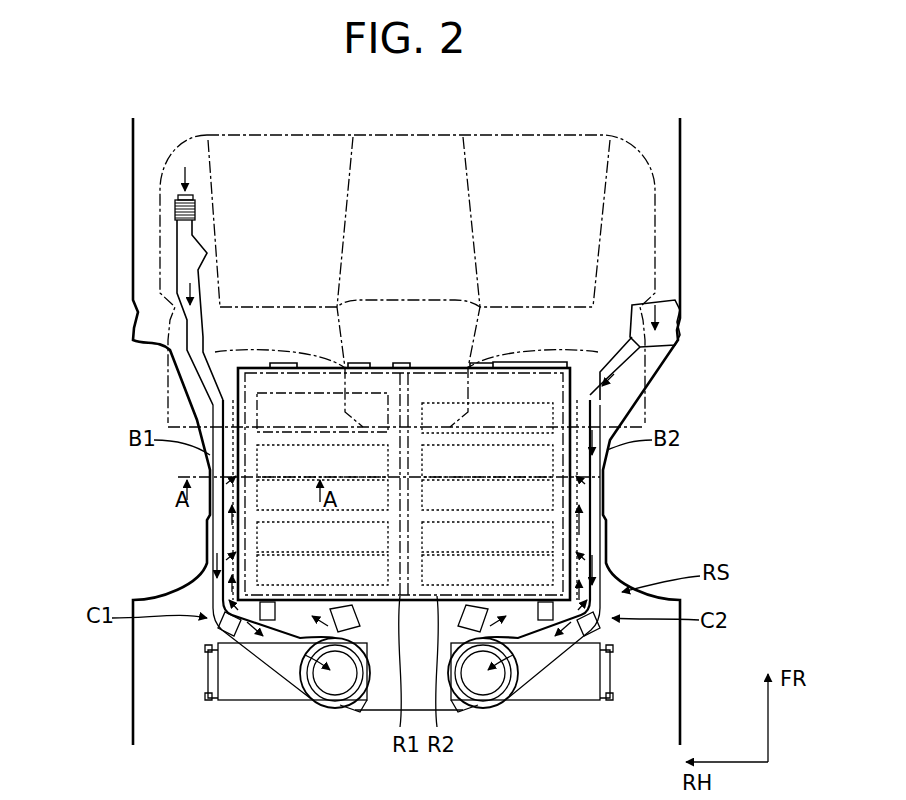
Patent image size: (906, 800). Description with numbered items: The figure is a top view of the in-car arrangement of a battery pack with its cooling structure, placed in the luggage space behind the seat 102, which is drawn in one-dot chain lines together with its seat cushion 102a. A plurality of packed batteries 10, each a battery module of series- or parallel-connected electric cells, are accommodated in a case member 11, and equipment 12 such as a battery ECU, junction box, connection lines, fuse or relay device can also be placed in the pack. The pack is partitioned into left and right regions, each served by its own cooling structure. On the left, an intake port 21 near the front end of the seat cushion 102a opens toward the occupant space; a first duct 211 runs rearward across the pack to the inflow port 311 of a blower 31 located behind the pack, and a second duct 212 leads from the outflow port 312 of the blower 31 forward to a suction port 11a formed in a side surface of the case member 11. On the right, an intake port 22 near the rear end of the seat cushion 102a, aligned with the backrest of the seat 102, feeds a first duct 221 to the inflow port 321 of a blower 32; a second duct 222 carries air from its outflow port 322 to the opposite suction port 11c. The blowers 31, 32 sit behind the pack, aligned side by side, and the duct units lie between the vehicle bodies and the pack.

The seat 102 is at (428, 132).
The seat cushion 102a is at (527, 165).
The intake port 21 is at (180, 193).
The intake port 22 is at (664, 300).
The case member 11 is at (235, 390).
The equipment 12 is at (245, 414).
The packed battery 10 is at (544, 582).
The suction port 11a is at (231, 478).
The suction port 11c is at (582, 478).
The first duct 211 is at (212, 522).
The second duct 212 is at (224, 540).
The first duct 221 is at (600, 520).
The second duct 222 is at (590, 540).
The blower 31 is at (331, 712).
The inflow port 311 is at (311, 700).
The outflow port 312 is at (358, 618).
The blower 32 is at (471, 712).
The inflow port 321 is at (489, 700).
The outflow port 322 is at (478, 617).